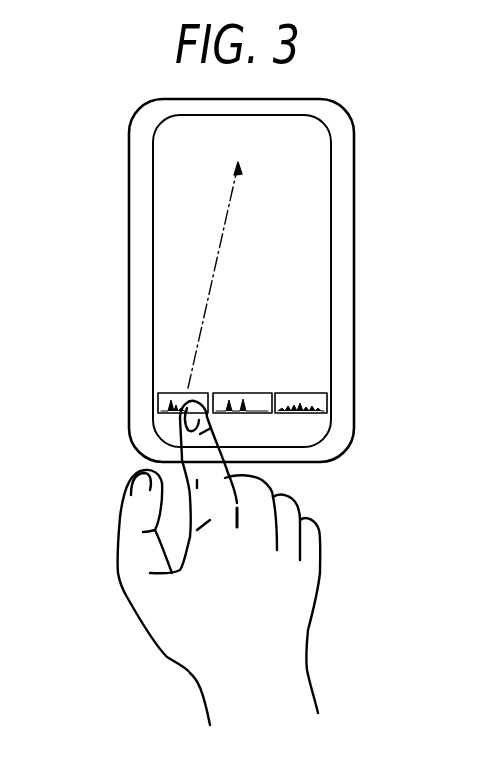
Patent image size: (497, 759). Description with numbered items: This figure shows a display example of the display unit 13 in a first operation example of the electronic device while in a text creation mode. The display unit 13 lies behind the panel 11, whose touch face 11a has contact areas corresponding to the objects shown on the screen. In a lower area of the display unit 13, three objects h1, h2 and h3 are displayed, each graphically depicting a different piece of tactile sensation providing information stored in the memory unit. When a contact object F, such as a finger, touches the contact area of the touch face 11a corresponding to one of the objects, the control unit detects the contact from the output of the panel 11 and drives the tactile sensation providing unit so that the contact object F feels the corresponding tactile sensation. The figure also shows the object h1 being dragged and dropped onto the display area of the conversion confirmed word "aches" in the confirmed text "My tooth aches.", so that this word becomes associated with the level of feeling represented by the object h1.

The display unit 13 is at (128, 238).
The panel 11 is at (293, 220).
The touch face 11a is at (307, 327).
The object h1 is at (175, 393).
The object h2 is at (238, 393).
The object h3 is at (302, 393).
The contact object F is at (212, 436).